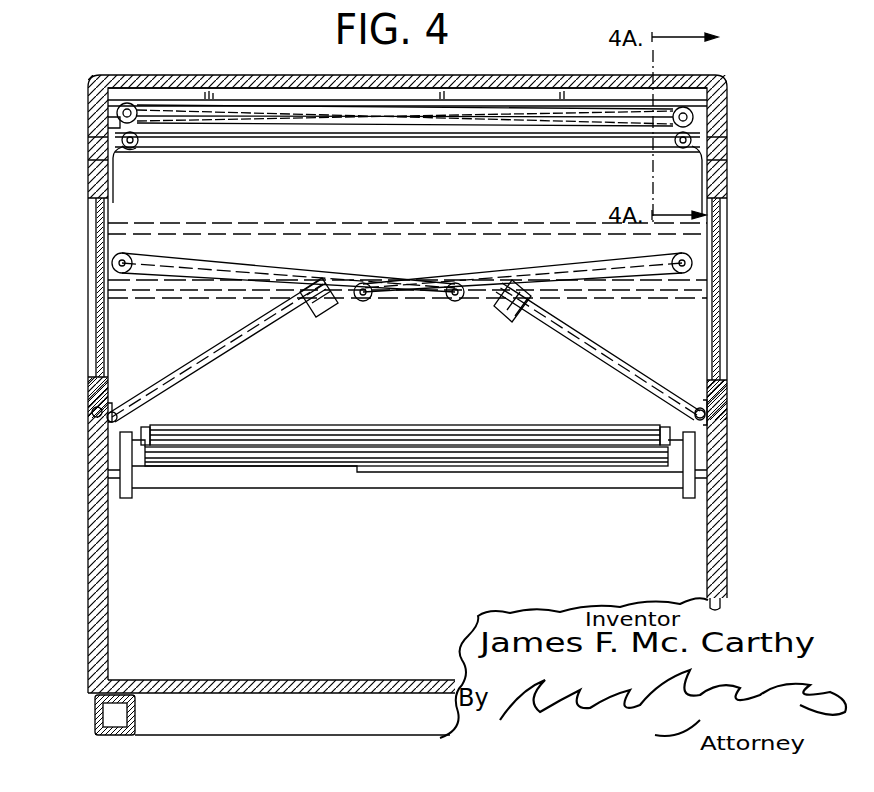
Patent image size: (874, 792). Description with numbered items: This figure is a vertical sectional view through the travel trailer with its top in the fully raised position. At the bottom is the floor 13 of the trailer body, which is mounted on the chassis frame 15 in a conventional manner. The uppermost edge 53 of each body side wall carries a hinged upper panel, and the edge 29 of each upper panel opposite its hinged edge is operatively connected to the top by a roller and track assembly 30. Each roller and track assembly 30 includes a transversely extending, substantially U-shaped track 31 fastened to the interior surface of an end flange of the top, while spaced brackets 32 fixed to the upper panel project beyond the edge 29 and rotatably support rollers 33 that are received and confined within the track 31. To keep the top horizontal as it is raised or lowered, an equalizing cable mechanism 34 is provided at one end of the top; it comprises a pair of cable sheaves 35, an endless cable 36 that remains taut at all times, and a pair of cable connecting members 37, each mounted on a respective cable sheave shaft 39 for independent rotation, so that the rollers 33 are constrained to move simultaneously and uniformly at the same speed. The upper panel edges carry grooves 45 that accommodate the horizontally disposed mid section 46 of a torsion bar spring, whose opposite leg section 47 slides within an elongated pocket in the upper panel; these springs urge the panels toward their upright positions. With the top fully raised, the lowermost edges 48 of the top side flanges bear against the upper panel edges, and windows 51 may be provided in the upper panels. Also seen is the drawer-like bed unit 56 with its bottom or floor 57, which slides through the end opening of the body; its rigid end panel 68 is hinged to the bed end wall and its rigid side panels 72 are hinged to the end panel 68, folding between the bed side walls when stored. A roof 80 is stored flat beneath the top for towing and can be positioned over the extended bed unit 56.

The floor 13 is at (262, 680).
The chassis frame 15 is at (90, 712).
The edge of upper panel 29 is at (107, 137).
The roller and track assembly 30 is at (135, 148).
The track 31 is at (311, 153).
The bracket 32 is at (114, 192).
The roller 33 is at (683, 149).
The equalizing cable mechanism 34 is at (402, 268).
The cable sheave 35 is at (127, 102).
The endless cable 36 is at (212, 96).
The cable connecting member 37 is at (107, 120).
The cable sheave shaft 39 is at (140, 144).
The groove 45 is at (92, 410).
The mid section of torsion bar spring 46 is at (97, 424).
The leg section of torsion bar spring 47 is at (88, 540).
The lowermost edge of top side flange 48 is at (95, 172).
The window 51 is at (100, 296).
The uppermost edge of body side wall 53 is at (712, 410).
The bed unit 56 is at (350, 490).
The bottom or floor of bed unit 57 is at (478, 482).
The end panel 68 is at (318, 440).
The side panel 72 is at (238, 455).
The roof 80 is at (528, 95).